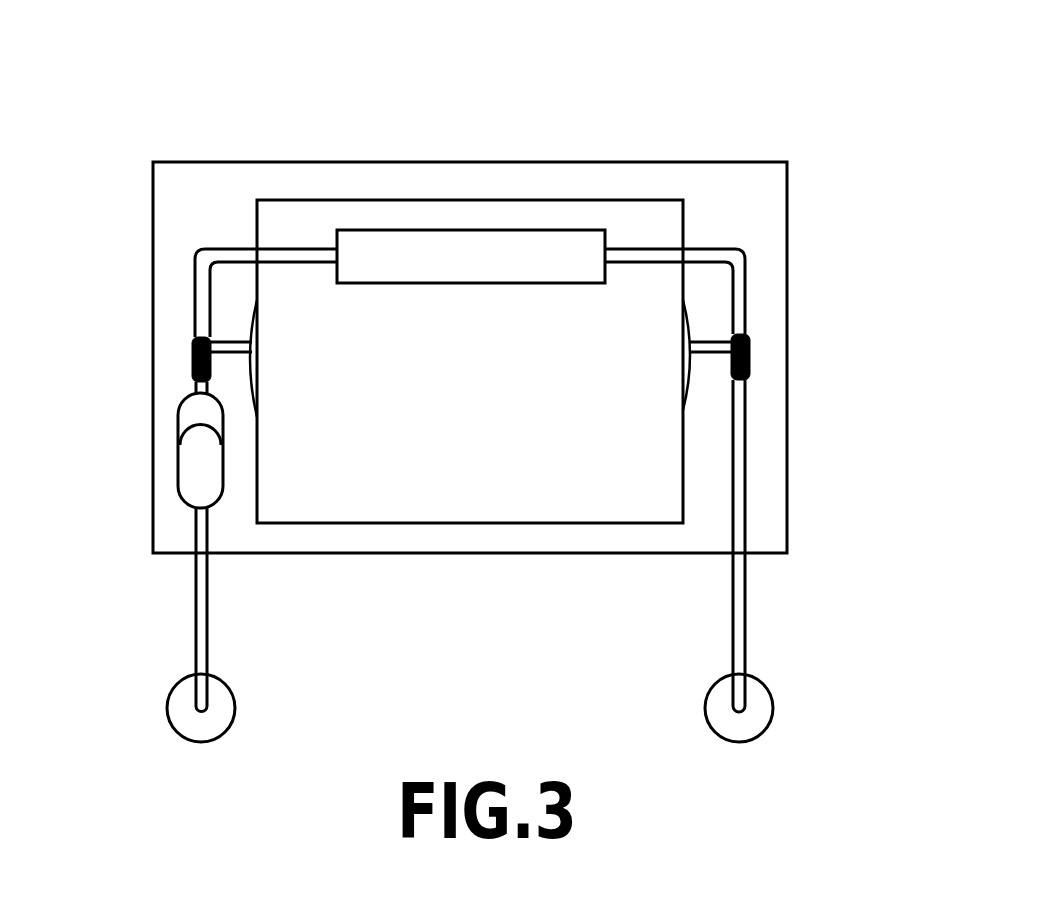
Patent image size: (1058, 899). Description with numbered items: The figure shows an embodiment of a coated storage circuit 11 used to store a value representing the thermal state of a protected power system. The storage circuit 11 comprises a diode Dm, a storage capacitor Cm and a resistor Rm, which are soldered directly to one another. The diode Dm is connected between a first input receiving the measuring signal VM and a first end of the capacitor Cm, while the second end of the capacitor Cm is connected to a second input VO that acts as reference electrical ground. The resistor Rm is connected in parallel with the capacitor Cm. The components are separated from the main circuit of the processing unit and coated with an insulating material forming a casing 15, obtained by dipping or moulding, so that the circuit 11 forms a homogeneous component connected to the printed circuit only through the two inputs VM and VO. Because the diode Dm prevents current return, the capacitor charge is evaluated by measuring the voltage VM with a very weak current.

The storage circuit 11 is at (518, 143).
The package housing 15 is at (788, 249).
The resistor Rm is at (448, 230).
The storage capacitor cm is at (615, 200).
The diode Dm is at (178, 458).
The measuring signal input VM is at (193, 622).
The second input VO is at (745, 623).